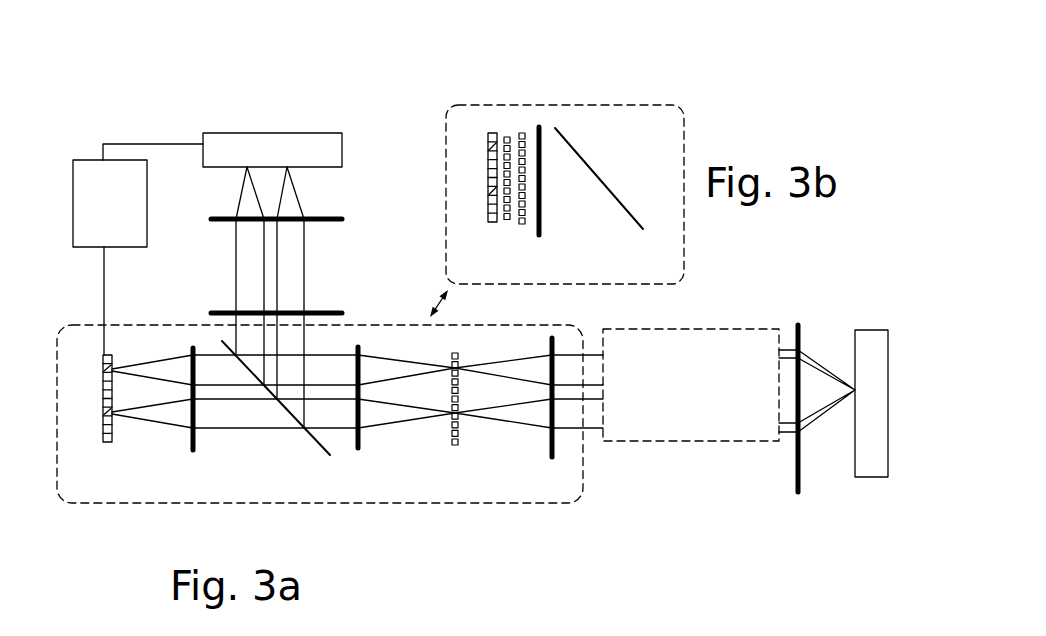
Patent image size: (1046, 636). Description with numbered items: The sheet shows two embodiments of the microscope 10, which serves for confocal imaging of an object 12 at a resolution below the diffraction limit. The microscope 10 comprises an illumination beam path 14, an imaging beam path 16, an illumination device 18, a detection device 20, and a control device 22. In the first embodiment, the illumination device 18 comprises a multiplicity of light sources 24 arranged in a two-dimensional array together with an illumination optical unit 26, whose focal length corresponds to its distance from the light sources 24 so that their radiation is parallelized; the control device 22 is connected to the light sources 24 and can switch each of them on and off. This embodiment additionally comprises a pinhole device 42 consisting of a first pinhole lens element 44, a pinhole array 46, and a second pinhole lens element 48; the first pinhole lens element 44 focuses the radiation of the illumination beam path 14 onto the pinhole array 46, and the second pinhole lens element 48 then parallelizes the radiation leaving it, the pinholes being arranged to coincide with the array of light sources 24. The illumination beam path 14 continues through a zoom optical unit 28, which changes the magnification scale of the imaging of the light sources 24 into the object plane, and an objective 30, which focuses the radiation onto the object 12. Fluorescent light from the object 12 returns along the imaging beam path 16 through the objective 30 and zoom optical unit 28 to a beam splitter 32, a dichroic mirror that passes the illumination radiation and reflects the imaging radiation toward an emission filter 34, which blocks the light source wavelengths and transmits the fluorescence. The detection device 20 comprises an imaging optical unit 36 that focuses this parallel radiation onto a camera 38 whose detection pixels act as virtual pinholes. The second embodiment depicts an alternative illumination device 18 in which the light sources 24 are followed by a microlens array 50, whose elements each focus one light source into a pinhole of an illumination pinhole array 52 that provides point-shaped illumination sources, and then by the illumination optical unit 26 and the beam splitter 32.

In FIG. 3A, the microscope 10 is at (70, 312).
In FIG. 3A, the object 12 is at (870, 330).
In FIG. 3A, the illumination beam path 14 is at (248, 443).
In FIG. 3A, the imaging beam path 16 is at (360, 258).
In FIG. 3A, the illumination device 18 is at (162, 450).
In FIG. 3B, the illumination device 18 is at (688, 100).
In FIG. 3A, the detection device 20 is at (335, 188).
In FIG. 3A, the control device 22 is at (87, 160).
In FIG. 3A, the light sources 24 is at (108, 442).
In FIG. 3B, the light sources 24 is at (492, 133).
In FIG. 3A, the illumination optical unit 26 is at (193, 452).
In FIG. 3B, the illumination optical unit 26 is at (541, 127).
In FIG. 3A, the zoom optical unit 28 is at (690, 441).
In FIG. 3A, the objective 30 is at (798, 494).
In FIG. 3A, the beam splitter 32 is at (317, 445).
In FIG. 3B, the beam splitter 32 is at (595, 170).
In FIG. 3A, the emission filter 34 is at (344, 313).
In FIG. 3A, the imaging optical unit 36 is at (344, 219).
In FIG. 3A, the camera 38 is at (270, 133).
In FIG. 3A, the pinhole device 42 is at (506, 480).
In FIG. 3A, the first pinhole lens element 44 is at (358, 450).
In FIG. 3A, the pinhole array 46 is at (455, 447).
In FIG. 3A, the second pinhole lens element 48 is at (552, 459).
In FIG. 3B, the microlens array 50 is at (507, 137).
In FIG. 3B, the illumination pinhole array 52 is at (523, 133).